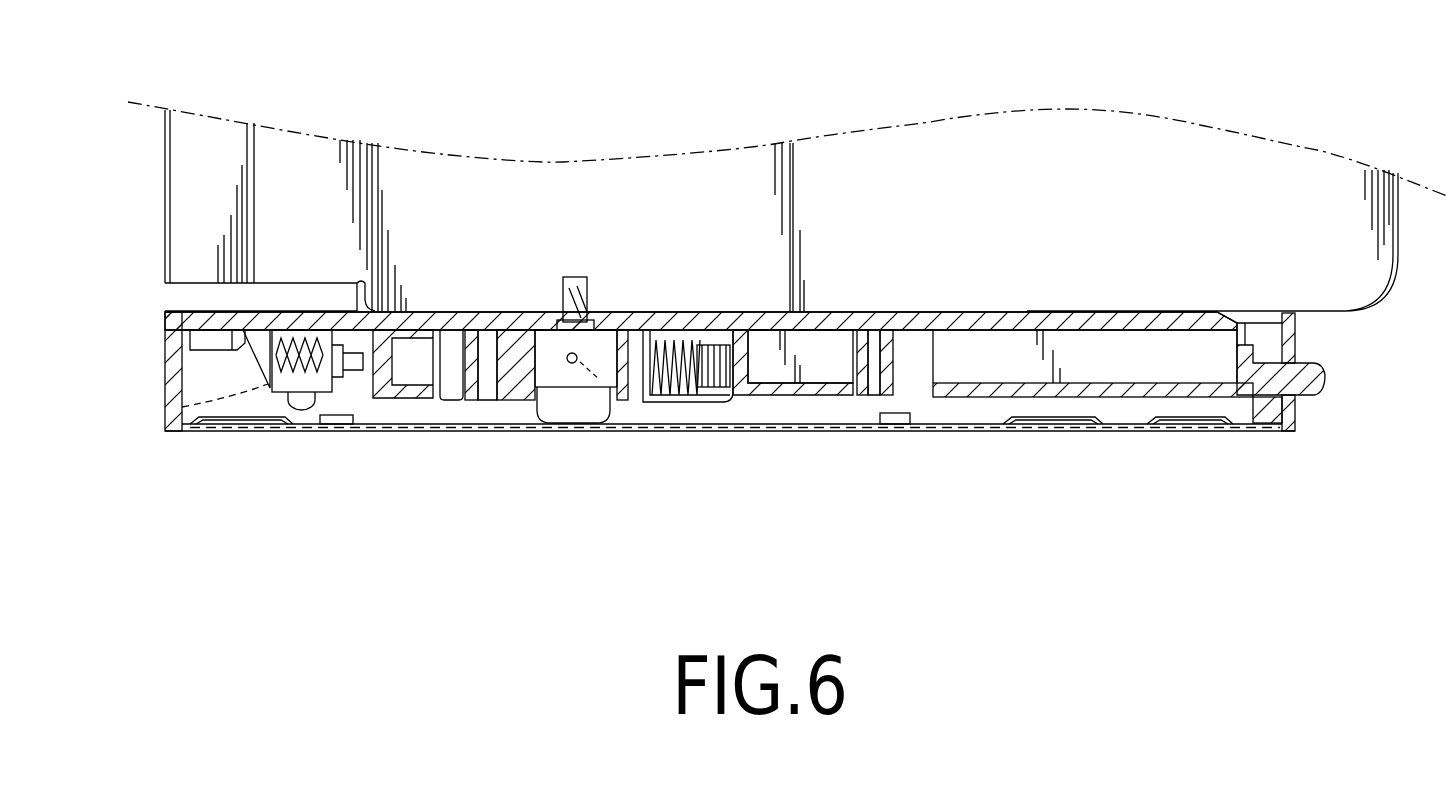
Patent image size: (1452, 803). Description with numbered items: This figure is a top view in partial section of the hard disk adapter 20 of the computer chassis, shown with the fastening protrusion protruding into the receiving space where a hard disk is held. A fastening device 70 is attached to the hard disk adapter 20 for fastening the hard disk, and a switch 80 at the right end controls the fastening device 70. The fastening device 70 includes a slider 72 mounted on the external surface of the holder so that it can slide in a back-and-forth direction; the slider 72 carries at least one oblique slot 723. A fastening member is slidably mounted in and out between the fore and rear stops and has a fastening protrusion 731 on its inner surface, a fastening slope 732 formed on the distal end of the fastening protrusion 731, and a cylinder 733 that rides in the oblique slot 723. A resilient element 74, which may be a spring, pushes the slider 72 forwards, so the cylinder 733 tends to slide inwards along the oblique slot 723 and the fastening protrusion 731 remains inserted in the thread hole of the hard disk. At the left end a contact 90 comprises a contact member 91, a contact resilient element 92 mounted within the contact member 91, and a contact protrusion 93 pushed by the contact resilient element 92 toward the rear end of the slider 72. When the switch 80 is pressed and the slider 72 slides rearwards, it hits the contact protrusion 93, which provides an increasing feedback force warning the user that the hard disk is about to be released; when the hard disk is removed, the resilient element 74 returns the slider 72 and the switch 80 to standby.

The hard disk adapter 20 is at (190, 215).
The fastening device 70 is at (820, 403).
The slider 72 is at (967, 390).
The oblique slot 723 is at (600, 378).
The fastening protrusion 731 is at (563, 299).
The fastening slope 732 is at (589, 282).
The cylinder 733 is at (570, 366).
The resilient element 74 is at (673, 387).
The switch 80 is at (1312, 372).
The contact 90 is at (320, 402).
The contact member 91 is at (280, 388).
The contact resilient element 92 is at (165, 405).
The contact protrusion 93 is at (358, 378).